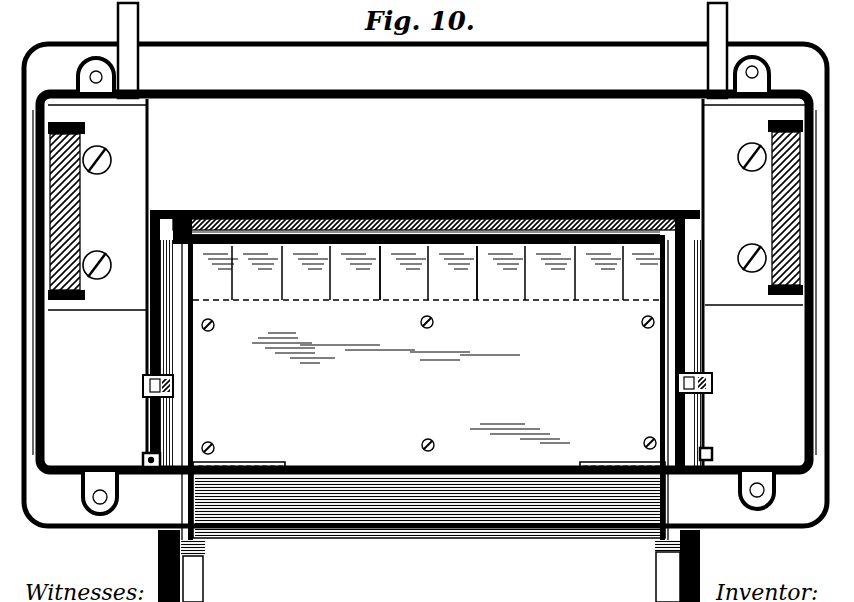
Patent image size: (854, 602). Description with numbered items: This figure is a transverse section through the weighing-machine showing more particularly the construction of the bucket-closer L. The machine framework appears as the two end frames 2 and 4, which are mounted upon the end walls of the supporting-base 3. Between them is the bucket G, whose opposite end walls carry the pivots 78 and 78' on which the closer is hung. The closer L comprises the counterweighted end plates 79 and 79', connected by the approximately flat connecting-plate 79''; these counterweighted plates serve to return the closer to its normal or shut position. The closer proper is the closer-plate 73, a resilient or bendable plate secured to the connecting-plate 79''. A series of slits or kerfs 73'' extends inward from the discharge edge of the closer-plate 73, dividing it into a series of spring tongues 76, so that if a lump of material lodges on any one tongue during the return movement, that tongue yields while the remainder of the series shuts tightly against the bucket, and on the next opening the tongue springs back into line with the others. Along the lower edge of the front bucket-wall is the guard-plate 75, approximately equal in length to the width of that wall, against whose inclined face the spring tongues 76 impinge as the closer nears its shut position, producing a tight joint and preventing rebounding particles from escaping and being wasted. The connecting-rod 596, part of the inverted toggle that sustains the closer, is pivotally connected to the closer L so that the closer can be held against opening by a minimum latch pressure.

The end frame 2 is at (84, 210).
The supporting-base 3 is at (73, 455).
The end frame 4 is at (770, 205).
The guard-plate 75 is at (258, 230).
The bucket G is at (290, 210).
The closer-plate 73 is at (425, 362).
The connecting-plate 79'' is at (411, 242).
The slits or kerfs 73'' is at (500, 242).
The spring tongues 76 is at (600, 248).
The connecting-rod 596 is at (145, 400).
The pivot 78 is at (130, 453).
The pivot 78' is at (718, 416).
The counterweighted end plate 79 is at (196, 566).
The counterweighted end plate 79' is at (700, 566).
The bucket-closer L is at (429, 466).